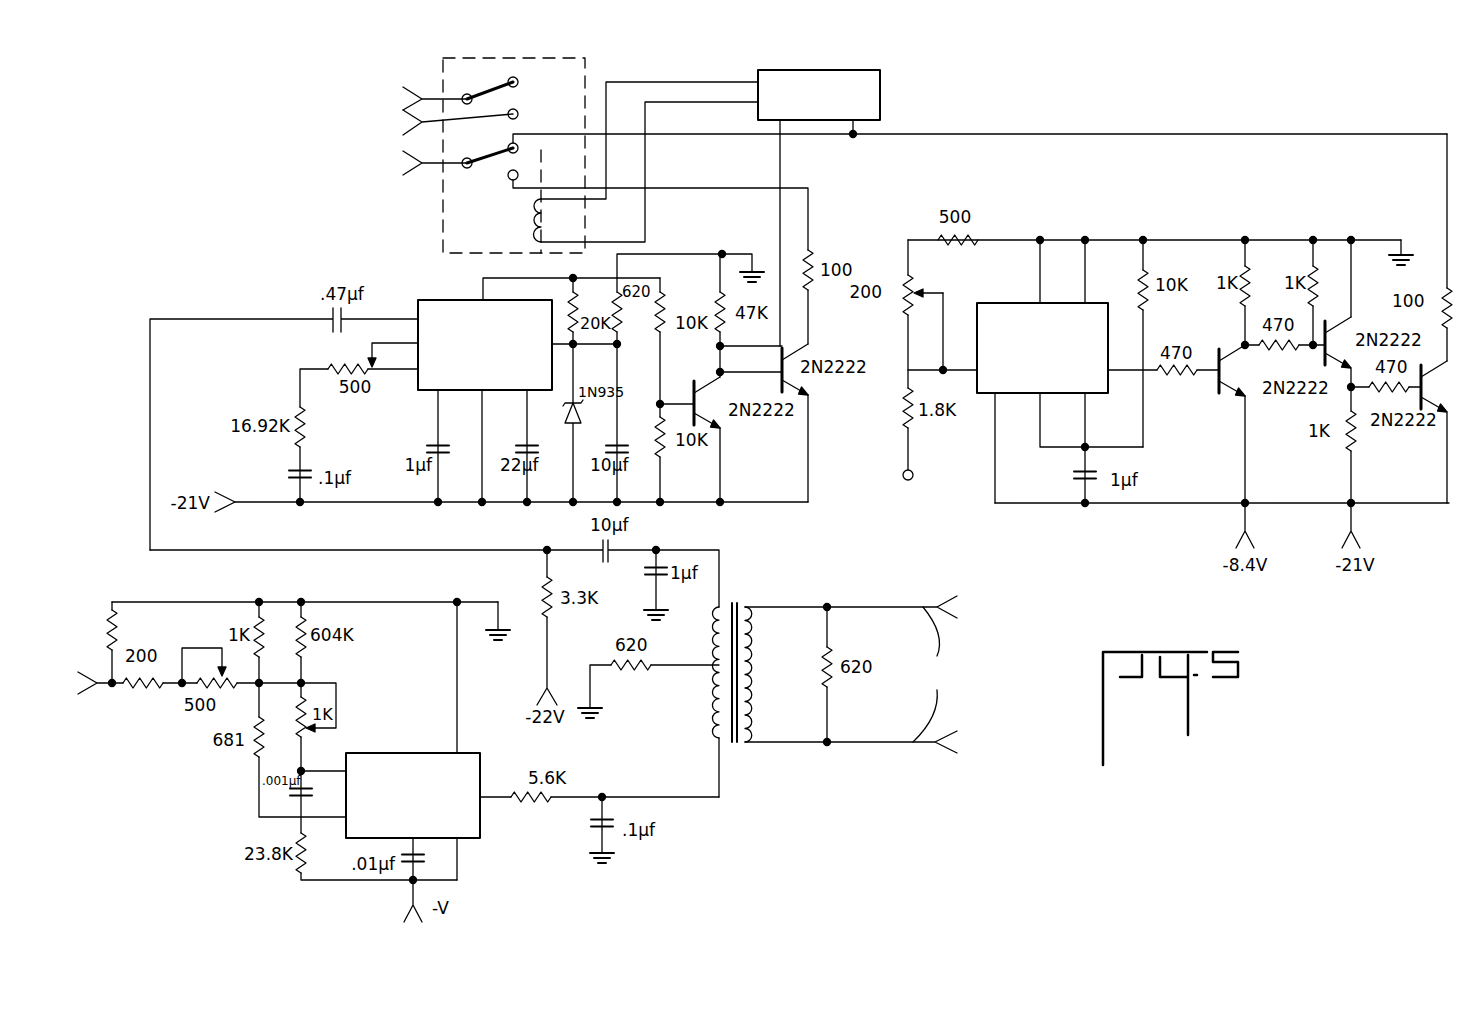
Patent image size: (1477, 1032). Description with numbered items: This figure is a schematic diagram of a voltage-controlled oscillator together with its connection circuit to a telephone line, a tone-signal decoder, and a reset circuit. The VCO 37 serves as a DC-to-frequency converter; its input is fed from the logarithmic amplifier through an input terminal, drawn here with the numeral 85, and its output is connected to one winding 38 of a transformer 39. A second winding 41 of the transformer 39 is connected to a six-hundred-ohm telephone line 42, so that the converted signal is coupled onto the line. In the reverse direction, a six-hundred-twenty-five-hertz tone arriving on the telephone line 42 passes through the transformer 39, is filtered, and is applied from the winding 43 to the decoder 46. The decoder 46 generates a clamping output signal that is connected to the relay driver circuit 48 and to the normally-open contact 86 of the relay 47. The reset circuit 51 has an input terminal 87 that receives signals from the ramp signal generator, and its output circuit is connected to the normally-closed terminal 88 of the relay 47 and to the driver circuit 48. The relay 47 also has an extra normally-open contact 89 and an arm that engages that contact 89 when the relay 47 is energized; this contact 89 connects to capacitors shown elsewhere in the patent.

The VCO 37 is at (381, 597).
The winding 38 is at (712, 705).
The transformer 39 is at (746, 606).
The second winding 41 is at (762, 692).
The telephone line 42 is at (892, 674).
The winding 43 is at (712, 643).
The decoder 46 is at (412, 287).
The relay 47 is at (585, 70).
The relay driver circuit 48 is at (880, 78).
The reset circuit 51 is at (1190, 225).
The input terminal 85 is at (100, 695).
The normally-open contact 86 is at (509, 180).
The input terminal 87 is at (912, 480).
The normally-closed terminal 88 is at (508, 147).
The normally-open contact 89 is at (519, 113).